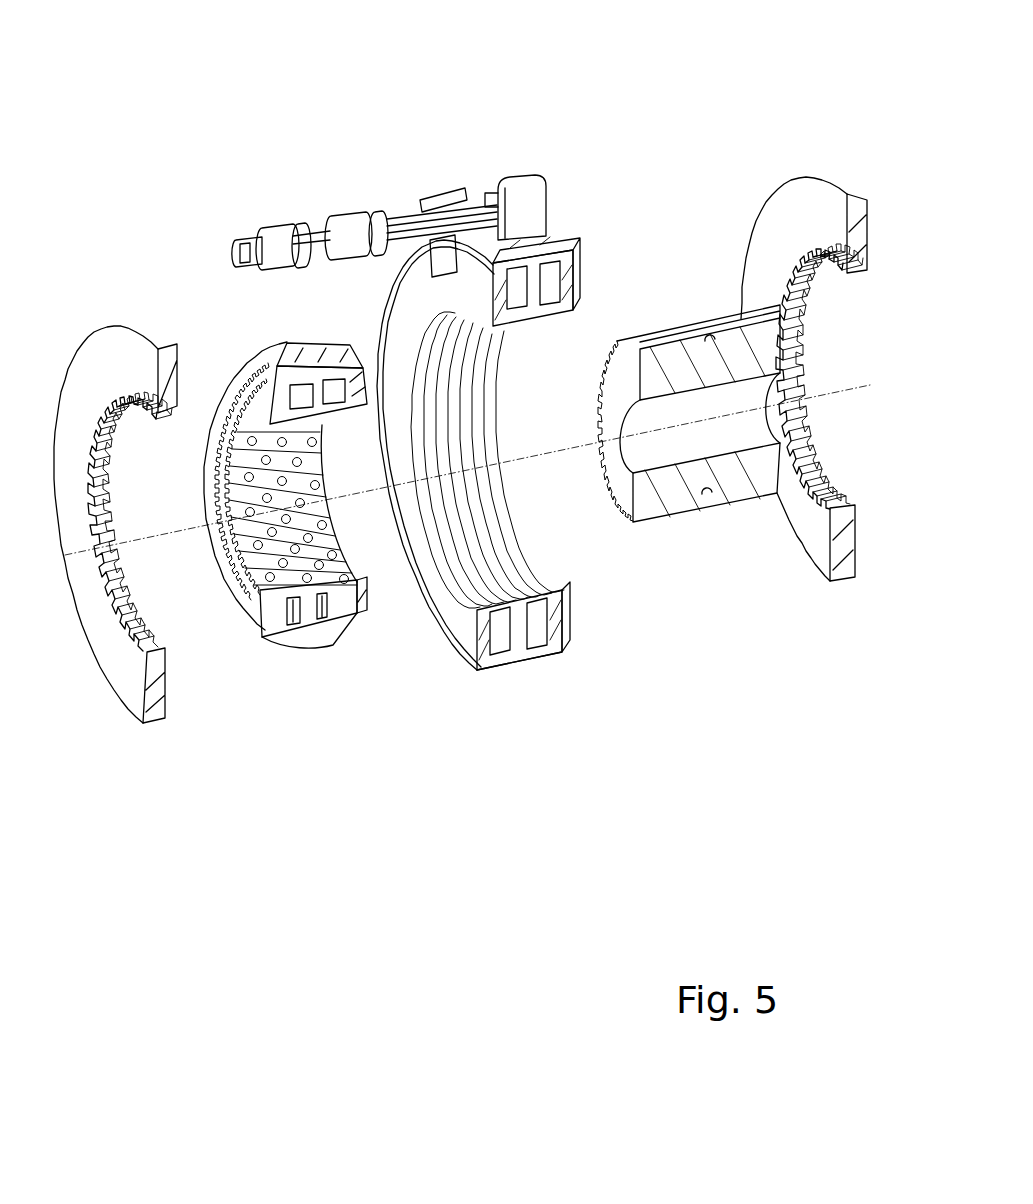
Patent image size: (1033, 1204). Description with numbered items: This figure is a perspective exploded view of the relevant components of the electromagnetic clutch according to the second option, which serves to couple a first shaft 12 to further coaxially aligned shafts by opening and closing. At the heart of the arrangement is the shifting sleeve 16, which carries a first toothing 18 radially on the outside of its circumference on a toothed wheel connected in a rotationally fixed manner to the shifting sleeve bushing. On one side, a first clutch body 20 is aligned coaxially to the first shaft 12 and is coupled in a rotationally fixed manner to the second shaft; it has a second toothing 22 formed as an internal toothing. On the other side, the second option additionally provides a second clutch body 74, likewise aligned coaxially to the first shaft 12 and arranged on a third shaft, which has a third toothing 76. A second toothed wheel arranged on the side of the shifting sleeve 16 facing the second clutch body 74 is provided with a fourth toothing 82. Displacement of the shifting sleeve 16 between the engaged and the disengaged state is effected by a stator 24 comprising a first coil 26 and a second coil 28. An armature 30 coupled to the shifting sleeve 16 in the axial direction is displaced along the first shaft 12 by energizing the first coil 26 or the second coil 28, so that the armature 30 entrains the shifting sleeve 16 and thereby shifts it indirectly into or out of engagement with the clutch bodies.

The first shaft 12 is at (685, 353).
The shifting sleeve 16 is at (307, 600).
The first toothing 18 is at (263, 645).
The first clutch body 20 is at (138, 343).
The second toothing 22 is at (155, 662).
The stator 24 is at (519, 200).
The first coil 26 is at (512, 283).
The second coil 28 is at (547, 283).
The armature 30 is at (290, 358).
The second clutch body 74 is at (818, 205).
The third toothing 76 is at (800, 507).
The fourth toothing 82 is at (350, 625).